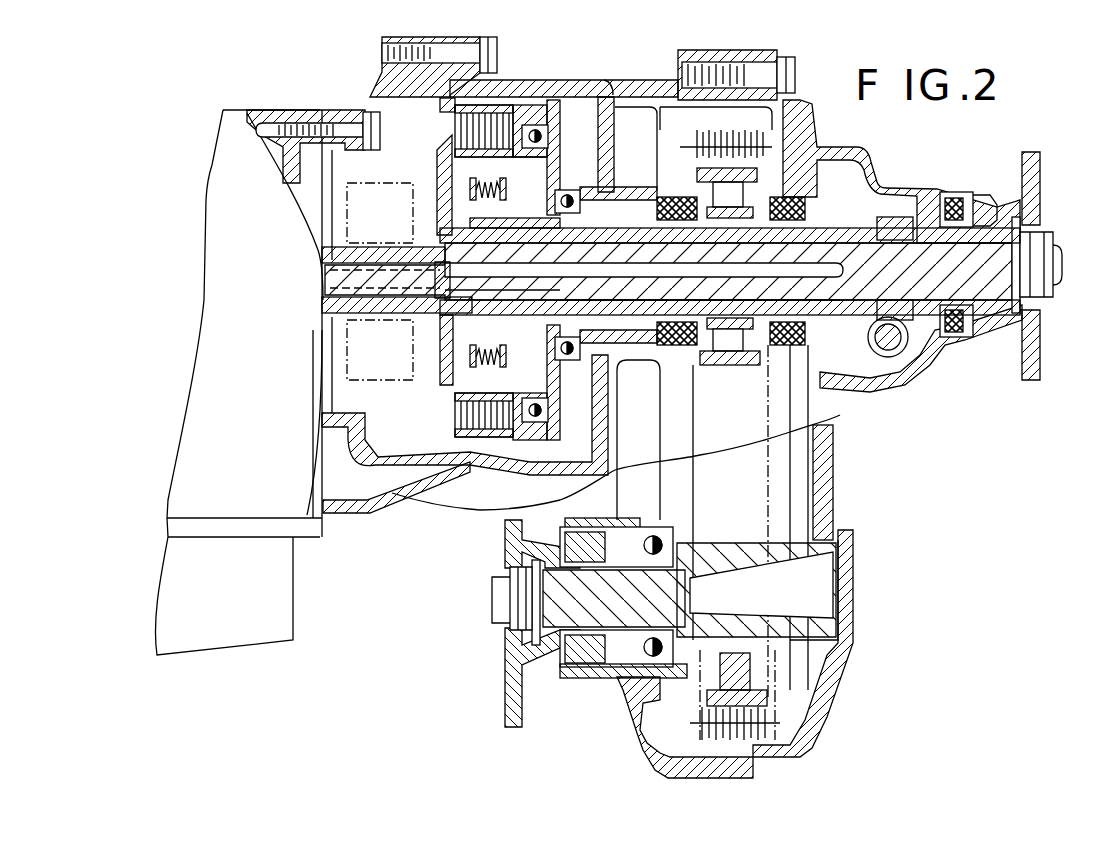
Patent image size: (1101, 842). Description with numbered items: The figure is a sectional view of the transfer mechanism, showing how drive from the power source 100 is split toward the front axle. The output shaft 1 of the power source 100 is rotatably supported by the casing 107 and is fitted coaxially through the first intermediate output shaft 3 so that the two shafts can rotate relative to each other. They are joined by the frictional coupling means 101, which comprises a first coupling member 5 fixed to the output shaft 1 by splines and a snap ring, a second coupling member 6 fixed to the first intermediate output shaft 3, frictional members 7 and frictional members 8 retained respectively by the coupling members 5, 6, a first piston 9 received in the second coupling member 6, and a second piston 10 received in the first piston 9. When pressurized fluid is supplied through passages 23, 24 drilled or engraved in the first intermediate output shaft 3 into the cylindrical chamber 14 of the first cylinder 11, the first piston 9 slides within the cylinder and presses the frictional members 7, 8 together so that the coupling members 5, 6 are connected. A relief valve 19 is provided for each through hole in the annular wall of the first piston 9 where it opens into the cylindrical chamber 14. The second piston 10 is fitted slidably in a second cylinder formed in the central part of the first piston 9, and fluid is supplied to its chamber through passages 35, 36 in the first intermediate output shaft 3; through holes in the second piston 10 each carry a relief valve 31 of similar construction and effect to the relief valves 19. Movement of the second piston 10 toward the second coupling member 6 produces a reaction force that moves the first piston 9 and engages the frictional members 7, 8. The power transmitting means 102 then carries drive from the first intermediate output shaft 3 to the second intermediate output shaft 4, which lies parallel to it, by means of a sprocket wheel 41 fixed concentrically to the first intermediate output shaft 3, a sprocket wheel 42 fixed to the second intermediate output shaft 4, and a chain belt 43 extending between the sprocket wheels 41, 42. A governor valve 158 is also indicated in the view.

The output shaft 1 is at (325, 306).
The first intermediate output shaft 3 is at (833, 236).
The second intermediate output shaft 4 is at (808, 553).
The first coupling member 5 is at (440, 178).
The second coupling member 6 is at (542, 120).
The frictional members 7 is at (490, 122).
The frictional members 8 is at (446, 101).
The first piston 9 is at (540, 137).
The second piston 10 is at (544, 190).
The first cylinder 11 is at (553, 428).
The cylindrical chamber 14 is at (550, 175).
The relief valve 19 is at (534, 108).
The passage 23 is at (590, 290).
The passage 24 is at (532, 281).
The relief valve 31 is at (476, 184).
The passage 35 is at (573, 229).
The passage 36 is at (512, 229).
The sprocket wheel 41 is at (752, 172).
The sprocket wheel 42 is at (800, 497).
The chain belt 43 is at (765, 104).
The power source 100 is at (252, 493).
The frictional coupling means 101 is at (500, 455).
The power transmitting means 102 is at (744, 106).
The casing 107 is at (602, 91).
The governor valve 158 is at (362, 220).